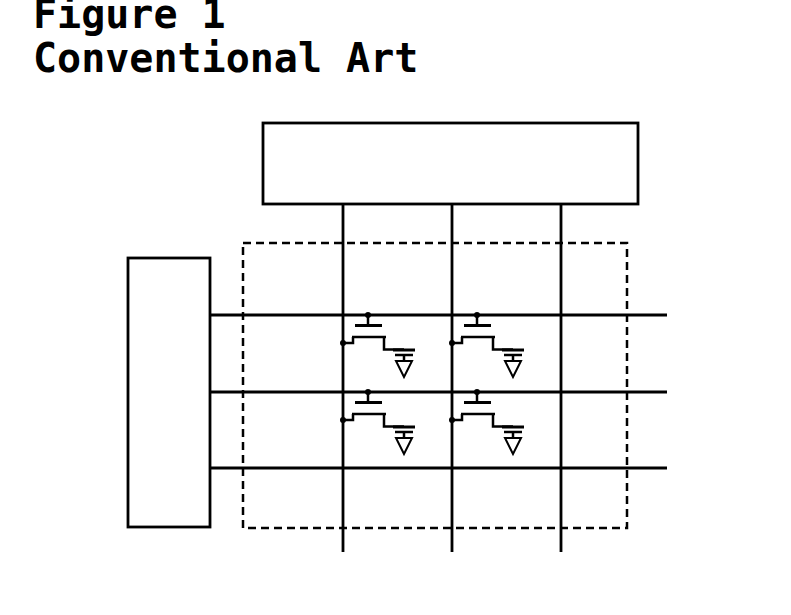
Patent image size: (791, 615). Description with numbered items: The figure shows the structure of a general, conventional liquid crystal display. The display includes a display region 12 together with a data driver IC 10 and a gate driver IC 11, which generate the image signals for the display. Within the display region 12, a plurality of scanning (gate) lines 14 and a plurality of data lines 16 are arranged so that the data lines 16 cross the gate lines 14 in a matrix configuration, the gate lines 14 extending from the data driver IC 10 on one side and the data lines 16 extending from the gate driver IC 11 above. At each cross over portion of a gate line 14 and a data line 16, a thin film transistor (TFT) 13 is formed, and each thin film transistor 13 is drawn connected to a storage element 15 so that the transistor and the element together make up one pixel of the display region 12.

The data driver IC 10 is at (128, 365).
The gate driver IC 11 is at (638, 158).
The display region 12 is at (627, 268).
The thin film transistor (TFT) 13 is at (365, 408).
The scanning (gate) lines 14 is at (613, 390).
The capacitor 15 is at (537, 439).
The data lines 16 is at (563, 518).